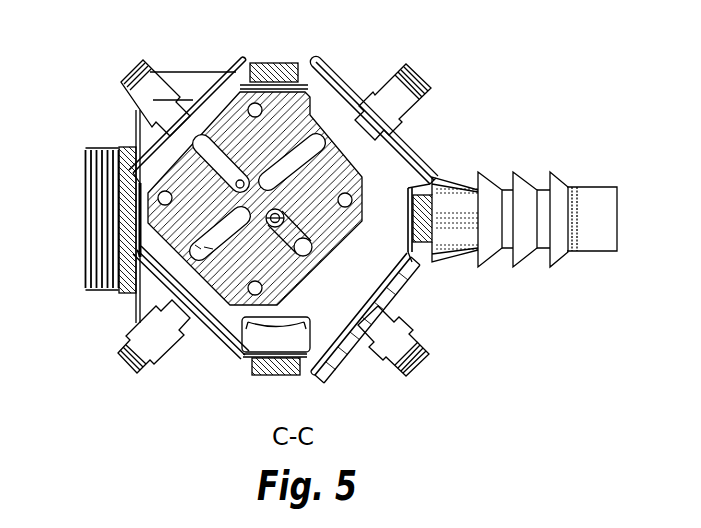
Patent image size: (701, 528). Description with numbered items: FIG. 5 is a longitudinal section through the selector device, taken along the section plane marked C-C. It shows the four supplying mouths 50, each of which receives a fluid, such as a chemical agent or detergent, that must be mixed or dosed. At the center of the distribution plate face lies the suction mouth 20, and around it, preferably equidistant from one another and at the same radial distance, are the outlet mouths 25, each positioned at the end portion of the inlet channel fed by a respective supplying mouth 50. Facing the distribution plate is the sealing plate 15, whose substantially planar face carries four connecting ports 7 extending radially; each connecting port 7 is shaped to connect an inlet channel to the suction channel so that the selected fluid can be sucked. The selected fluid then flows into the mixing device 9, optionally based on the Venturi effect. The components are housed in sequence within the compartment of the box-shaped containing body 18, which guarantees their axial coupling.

The connecting port 7 is at (225, 163).
The mixing device 9 is at (487, 247).
The sealing plate 15 is at (240, 125).
The containing body 18 is at (273, 360).
The suction mouth 20 is at (282, 218).
The outlet mouth 25 is at (390, 297).
The supplying mouth 50 is at (139, 62).